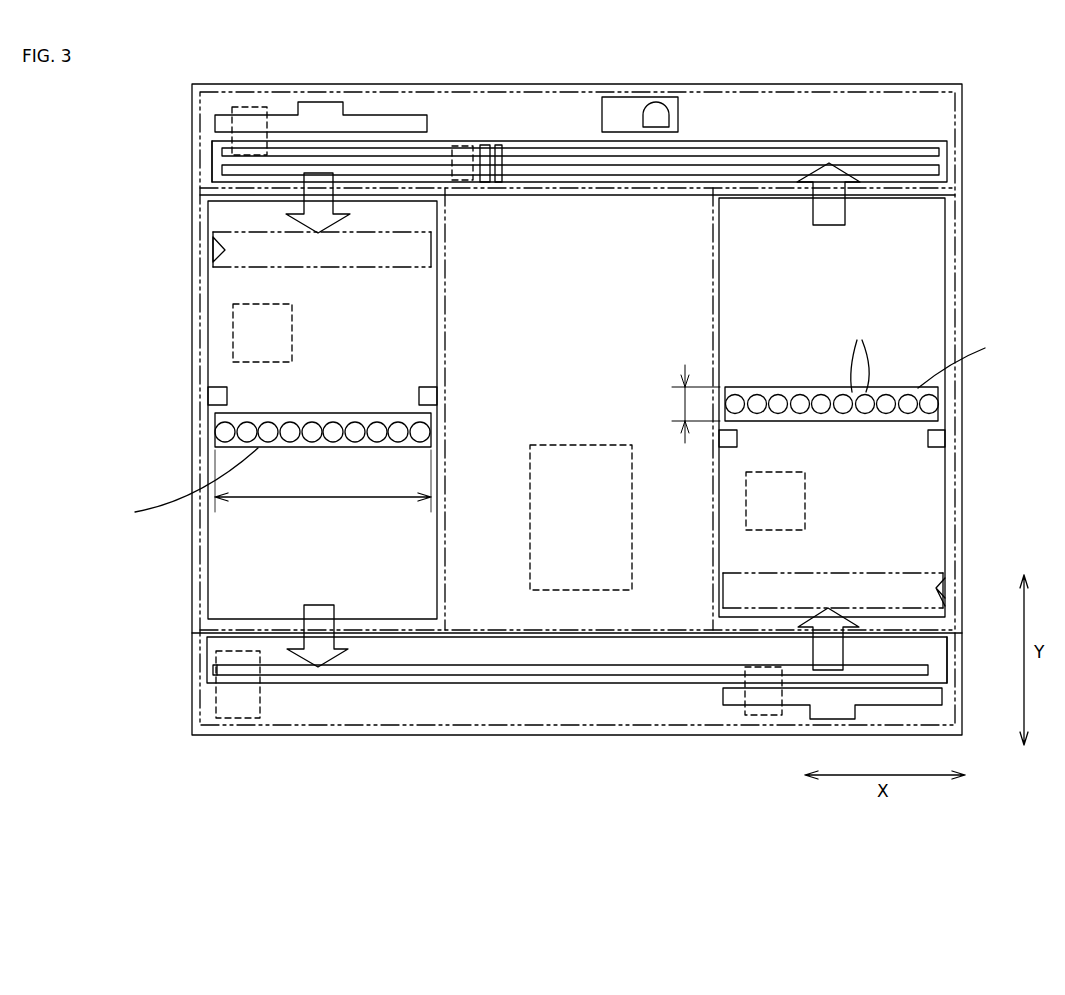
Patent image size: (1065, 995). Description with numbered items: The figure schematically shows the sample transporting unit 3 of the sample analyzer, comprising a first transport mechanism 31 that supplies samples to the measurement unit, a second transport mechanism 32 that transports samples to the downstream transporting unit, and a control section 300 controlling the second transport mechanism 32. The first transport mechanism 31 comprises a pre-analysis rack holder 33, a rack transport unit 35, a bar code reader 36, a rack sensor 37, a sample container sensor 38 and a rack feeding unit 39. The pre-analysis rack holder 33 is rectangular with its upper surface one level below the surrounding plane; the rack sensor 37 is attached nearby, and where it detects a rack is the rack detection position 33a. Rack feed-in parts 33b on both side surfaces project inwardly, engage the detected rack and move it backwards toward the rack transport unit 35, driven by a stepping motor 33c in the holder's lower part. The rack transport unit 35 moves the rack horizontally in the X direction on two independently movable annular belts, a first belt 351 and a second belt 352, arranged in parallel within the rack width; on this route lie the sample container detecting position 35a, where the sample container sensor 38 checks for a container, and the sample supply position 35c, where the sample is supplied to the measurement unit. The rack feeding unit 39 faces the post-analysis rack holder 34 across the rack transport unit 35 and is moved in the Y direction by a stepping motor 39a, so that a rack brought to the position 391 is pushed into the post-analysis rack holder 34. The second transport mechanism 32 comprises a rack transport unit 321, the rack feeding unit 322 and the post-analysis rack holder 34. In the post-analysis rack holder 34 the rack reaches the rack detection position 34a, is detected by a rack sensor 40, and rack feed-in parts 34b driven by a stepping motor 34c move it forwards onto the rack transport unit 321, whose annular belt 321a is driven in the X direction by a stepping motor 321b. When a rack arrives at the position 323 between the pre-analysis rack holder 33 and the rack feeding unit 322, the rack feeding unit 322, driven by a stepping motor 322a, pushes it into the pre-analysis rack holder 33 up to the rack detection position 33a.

The sample transporting unit 3 is at (963, 92).
The first transport mechanism 31 is at (788, 90).
The second transport mechanism 32 is at (549, 713).
The pre-analysis rack holder 33 is at (852, 410).
The rack detection position 33a is at (870, 573).
The rack feed-in parts 33b is at (728, 450).
The stepping motor 33c is at (805, 500).
The post-analysis rack holder 34 is at (294, 410).
The rack detection position 34a is at (280, 268).
The rack feed-in parts 34b is at (208, 392).
The stepping motor 34c is at (292, 342).
The rack transport unit 35 is at (530, 146).
The sample container detecting position 35a is at (499, 145).
The sample supply position 35c is at (460, 146).
The first belt 351 is at (906, 148).
The second belt 352 is at (889, 176).
The bar code reader 36 is at (660, 97).
The rack sensor 37 is at (945, 618).
The sample container sensor 38 is at (485, 145).
The rack feeding unit 39 is at (372, 115).
The stepping motor 39a is at (250, 107).
The position 391 is at (208, 162).
The rack sensor 40 is at (215, 245).
The control section 300 is at (588, 590).
The rack transport unit 321 is at (612, 710).
The belt 321a is at (369, 676).
The stepping motor 321b is at (216, 698).
The rack feeding unit 322 is at (811, 725).
The stepping motor 322a is at (763, 715).
The position 323 is at (947, 672).